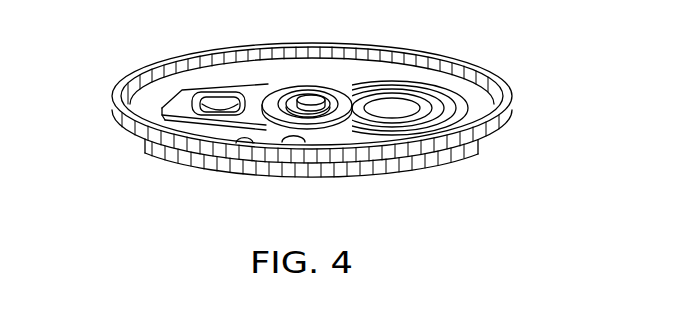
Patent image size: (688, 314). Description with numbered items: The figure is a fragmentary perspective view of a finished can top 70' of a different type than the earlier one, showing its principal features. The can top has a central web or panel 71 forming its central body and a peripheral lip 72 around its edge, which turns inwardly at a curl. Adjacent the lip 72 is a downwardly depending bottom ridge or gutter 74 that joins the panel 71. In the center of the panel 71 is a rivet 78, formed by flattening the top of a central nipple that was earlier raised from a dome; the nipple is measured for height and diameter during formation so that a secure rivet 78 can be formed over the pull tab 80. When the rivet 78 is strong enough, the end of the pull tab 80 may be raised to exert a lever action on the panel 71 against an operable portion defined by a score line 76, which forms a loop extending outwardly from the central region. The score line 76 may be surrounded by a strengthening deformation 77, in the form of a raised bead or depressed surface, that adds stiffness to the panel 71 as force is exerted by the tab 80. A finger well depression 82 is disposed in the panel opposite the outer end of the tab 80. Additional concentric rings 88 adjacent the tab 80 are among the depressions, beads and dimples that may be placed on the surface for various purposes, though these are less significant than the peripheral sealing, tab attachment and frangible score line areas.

The peripheral lip 72 is at (117, 97).
The bottom ridge or gutter 74 is at (148, 102).
The finger well depression 82 is at (183, 113).
The pull tab 80 is at (252, 100).
The rivet 78 is at (307, 99).
The inner annular ring 88 is at (404, 103).
The score line 76 is at (423, 108).
The strengthening deformation 77 is at (451, 110).
The finished can top 70' is at (215, 178).
The central web or panel 71 is at (303, 136).